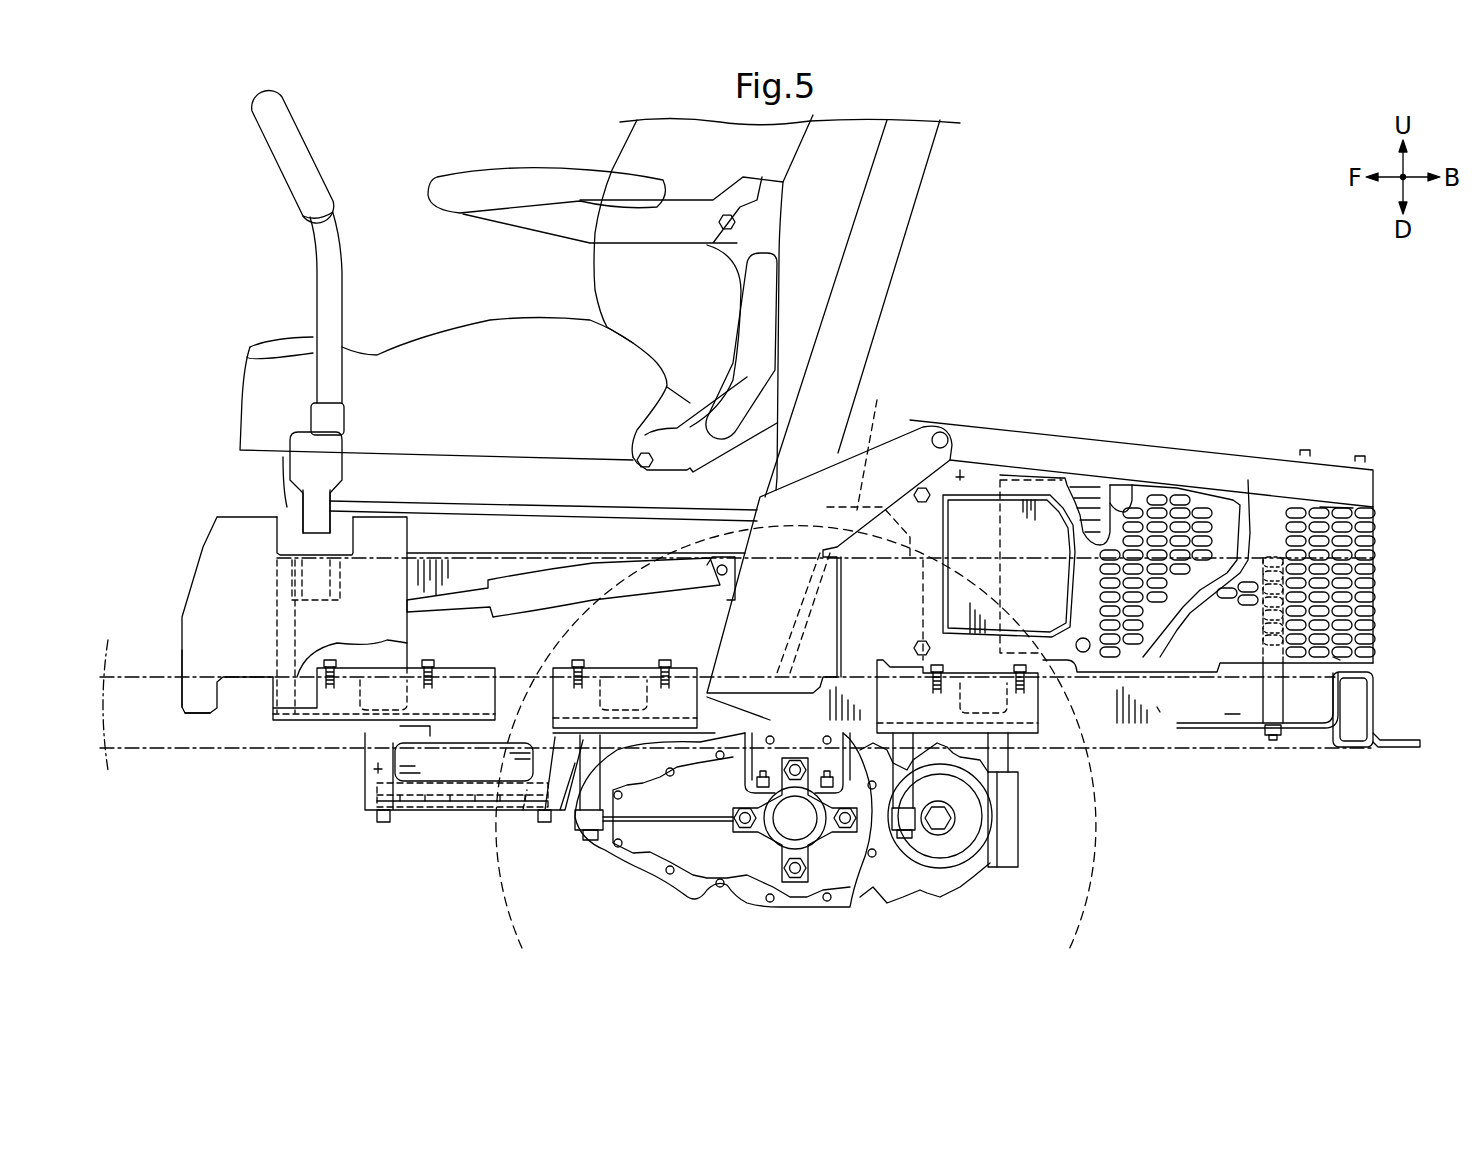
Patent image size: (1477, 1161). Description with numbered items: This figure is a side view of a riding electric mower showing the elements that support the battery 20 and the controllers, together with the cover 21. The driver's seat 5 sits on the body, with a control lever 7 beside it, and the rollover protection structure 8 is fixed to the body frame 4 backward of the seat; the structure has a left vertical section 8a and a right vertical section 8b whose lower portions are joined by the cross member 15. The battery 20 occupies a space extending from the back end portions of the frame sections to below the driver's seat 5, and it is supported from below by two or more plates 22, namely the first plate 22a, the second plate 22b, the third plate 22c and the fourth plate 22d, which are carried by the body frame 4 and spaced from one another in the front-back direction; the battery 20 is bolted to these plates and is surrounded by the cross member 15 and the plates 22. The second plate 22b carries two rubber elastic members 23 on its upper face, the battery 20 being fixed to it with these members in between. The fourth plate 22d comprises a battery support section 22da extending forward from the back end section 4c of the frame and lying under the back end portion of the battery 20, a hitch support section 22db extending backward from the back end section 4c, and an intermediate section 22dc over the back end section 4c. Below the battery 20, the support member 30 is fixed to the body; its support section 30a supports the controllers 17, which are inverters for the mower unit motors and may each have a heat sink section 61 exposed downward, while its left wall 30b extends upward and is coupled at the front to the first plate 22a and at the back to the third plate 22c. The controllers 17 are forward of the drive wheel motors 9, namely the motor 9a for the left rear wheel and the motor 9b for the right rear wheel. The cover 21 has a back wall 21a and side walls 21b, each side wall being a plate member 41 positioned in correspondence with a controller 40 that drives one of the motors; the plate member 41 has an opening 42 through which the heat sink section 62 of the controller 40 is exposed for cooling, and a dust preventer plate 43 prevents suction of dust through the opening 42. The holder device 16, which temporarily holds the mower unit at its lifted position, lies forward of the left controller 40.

The body frame 4 is at (752, 754).
The back end section 4c is at (1350, 733).
The driver's seat 5 is at (527, 335).
The control lever 7 is at (323, 252).
The rollover protection structure 8 is at (730, 306).
The left vertical section 8a is at (826, 308).
The right vertical section 8b is at (893, 230).
The drive wheel motor 9 is at (789, 846).
The motor 9a is at (740, 860).
The motor 9b is at (927, 855).
The cross member 15 is at (918, 420).
The holder device 16 is at (527, 590).
The controller 17 is at (452, 765).
The battery 20 is at (1165, 697).
The cover 21 is at (1170, 521).
The back wall 21a is at (1373, 538).
The side wall 21b is at (1182, 487).
The plate 22 is at (869, 709).
The first plate 22a is at (318, 728).
The second plate 22b is at (1046, 698).
The third plate 22c is at (627, 663).
The fourth plate 22d is at (1327, 709).
The battery support section 22da is at (1237, 712).
The hitch support section 22db is at (1417, 737).
The intermediate section 22dc is at (1333, 657).
The elastic member 23 is at (578, 730).
The support member 30 is at (450, 830).
The support section 30a is at (407, 815).
The left wall 30b is at (373, 770).
The controller 40 is at (1123, 503).
The plate member 41 is at (960, 477).
The opening 42 is at (1080, 605).
The dust preventer plate 43 is at (1052, 522).
The heat sink section 61 is at (523, 810).
The heat sink section 62 is at (1087, 503).